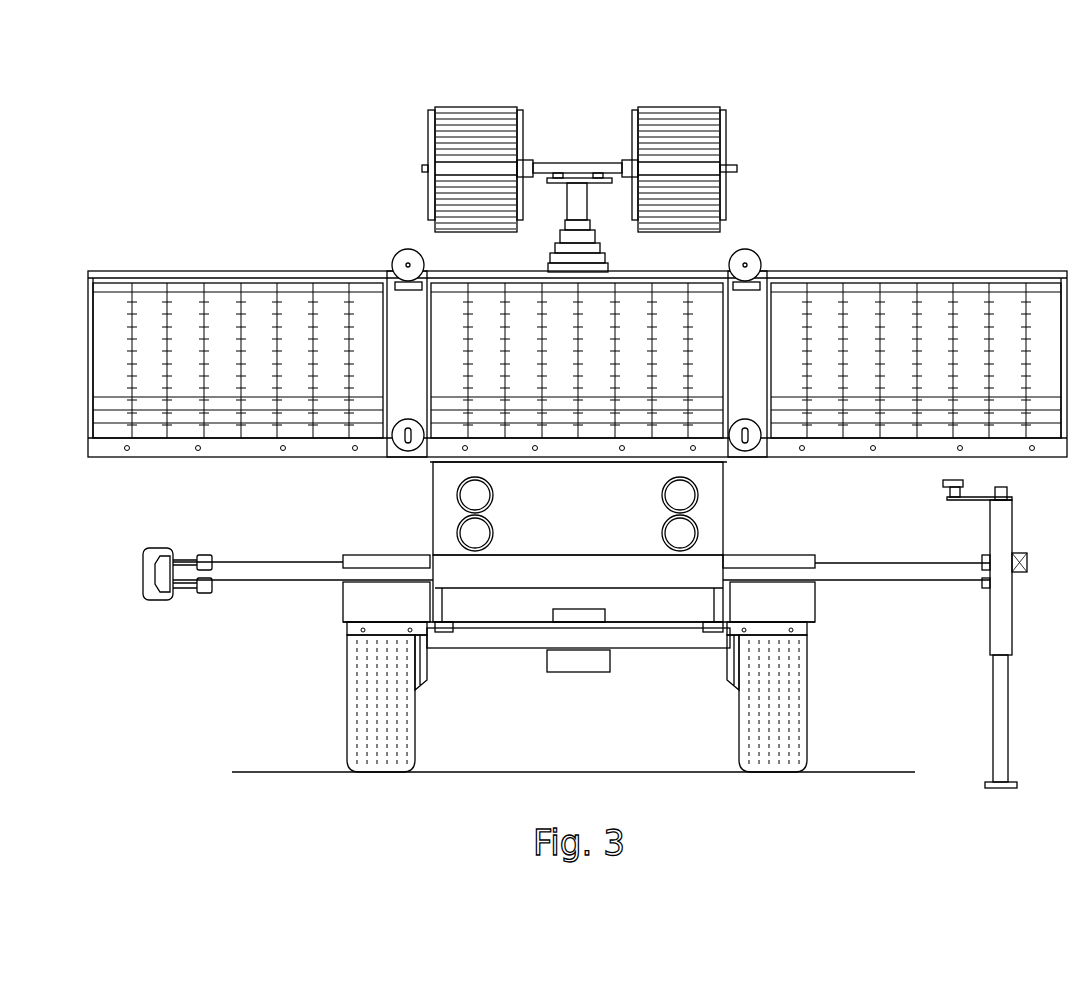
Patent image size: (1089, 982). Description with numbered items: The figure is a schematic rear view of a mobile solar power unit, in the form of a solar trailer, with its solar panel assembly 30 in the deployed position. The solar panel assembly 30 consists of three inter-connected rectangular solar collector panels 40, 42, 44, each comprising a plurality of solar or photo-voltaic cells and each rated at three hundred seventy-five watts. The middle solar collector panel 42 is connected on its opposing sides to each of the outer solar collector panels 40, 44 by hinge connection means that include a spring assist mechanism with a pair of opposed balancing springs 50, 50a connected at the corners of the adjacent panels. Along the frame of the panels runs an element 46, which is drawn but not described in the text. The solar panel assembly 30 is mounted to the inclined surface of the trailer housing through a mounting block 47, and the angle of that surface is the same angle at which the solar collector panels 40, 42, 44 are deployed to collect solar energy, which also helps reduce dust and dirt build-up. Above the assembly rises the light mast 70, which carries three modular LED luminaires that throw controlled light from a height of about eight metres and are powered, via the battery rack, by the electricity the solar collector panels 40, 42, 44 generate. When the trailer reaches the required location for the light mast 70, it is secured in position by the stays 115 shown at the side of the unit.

The solar panel assembly 30 is at (828, 251).
The solar collector panel 40 is at (262, 413).
The solar collector panel 42 is at (524, 316).
The solar collector panel 44 is at (918, 270).
The rack frame rail 46 is at (250, 270).
The mounting block 47 is at (707, 465).
The balancing spring 50 is at (408, 262).
The balancing spring 50a is at (408, 440).
The light mast 70 is at (578, 143).
The stays 115 is at (1012, 718).